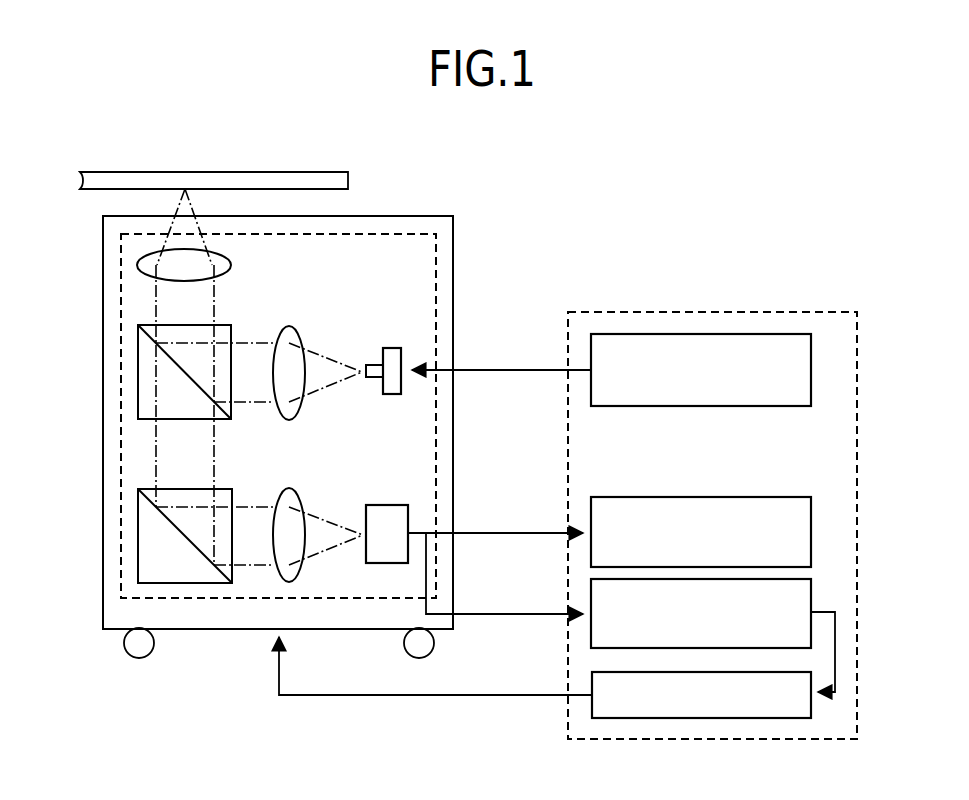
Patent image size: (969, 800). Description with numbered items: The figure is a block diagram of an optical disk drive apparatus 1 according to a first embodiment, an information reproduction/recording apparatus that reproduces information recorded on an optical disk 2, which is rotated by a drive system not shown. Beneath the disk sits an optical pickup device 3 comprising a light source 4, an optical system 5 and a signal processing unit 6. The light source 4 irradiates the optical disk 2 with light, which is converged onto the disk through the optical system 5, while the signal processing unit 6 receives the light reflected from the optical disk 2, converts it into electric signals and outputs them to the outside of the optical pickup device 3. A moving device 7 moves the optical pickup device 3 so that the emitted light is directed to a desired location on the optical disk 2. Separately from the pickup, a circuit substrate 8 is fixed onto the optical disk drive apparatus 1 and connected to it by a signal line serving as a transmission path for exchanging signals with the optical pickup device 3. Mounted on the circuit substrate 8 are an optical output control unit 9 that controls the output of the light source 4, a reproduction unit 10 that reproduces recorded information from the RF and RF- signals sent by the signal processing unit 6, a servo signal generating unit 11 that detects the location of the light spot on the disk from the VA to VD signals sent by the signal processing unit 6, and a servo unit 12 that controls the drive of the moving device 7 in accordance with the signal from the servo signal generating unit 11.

The optical disk drive apparatus 1 is at (555, 226).
The optical disk 2 is at (310, 171).
The optical pickup device 3 is at (121, 266).
The light source 4 is at (392, 348).
The optical system 5 is at (342, 270).
The signal processing unit 6 is at (388, 505).
The moving device 7 is at (103, 521).
The circuit substrate 8 is at (770, 311).
The optical output control unit 9 is at (811, 367).
The reproduction unit 10 is at (811, 528).
The servo signal generating unit 11 is at (811, 588).
The servo unit 12 is at (811, 703).